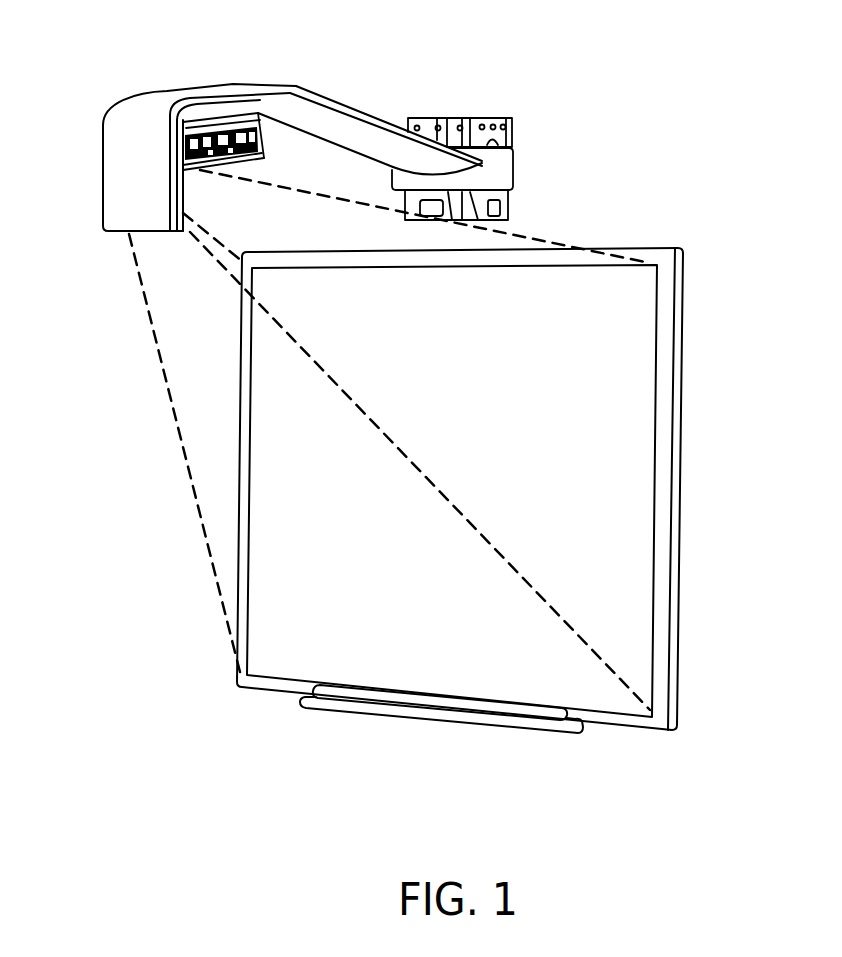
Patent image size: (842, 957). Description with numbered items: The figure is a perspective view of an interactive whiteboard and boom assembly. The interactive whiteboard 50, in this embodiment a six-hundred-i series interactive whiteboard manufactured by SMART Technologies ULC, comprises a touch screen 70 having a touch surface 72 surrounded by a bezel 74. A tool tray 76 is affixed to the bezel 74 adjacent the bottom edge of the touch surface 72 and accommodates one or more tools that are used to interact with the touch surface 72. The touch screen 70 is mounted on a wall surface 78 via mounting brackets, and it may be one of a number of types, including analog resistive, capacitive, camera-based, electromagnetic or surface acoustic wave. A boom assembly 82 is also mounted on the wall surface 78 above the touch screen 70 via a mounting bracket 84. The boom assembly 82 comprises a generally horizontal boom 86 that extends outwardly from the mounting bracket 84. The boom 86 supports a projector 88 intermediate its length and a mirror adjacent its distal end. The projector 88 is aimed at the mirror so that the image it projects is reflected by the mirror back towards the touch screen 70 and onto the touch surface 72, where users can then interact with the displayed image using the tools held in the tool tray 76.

The interactive whiteboard 50 is at (155, 659).
The touch screen 70 is at (499, 428).
The touch surface 72 is at (610, 563).
The bezel 74 is at (672, 316).
The tool tray 76 is at (320, 707).
The wall surface 78 is at (745, 63).
The boom assembly 82 is at (356, 94).
The mounting bracket 84 is at (493, 120).
The boom 86 is at (272, 91).
The projector 88 is at (267, 148).